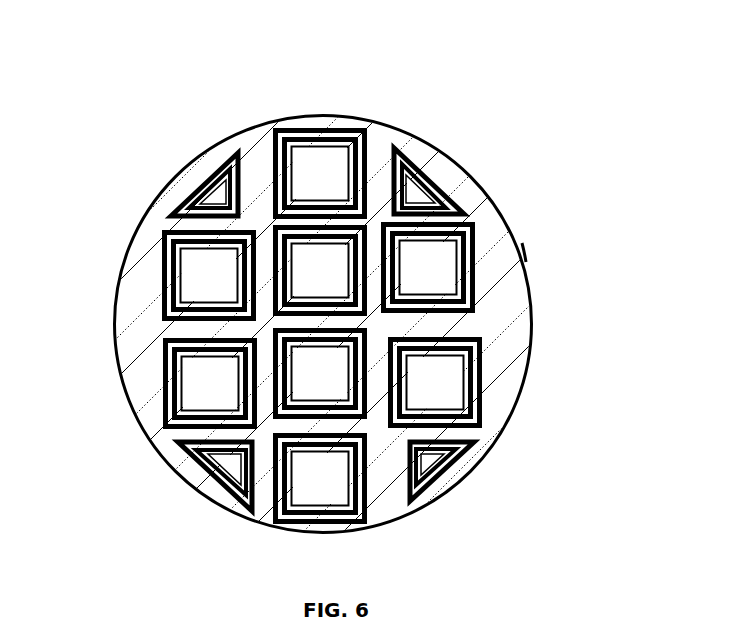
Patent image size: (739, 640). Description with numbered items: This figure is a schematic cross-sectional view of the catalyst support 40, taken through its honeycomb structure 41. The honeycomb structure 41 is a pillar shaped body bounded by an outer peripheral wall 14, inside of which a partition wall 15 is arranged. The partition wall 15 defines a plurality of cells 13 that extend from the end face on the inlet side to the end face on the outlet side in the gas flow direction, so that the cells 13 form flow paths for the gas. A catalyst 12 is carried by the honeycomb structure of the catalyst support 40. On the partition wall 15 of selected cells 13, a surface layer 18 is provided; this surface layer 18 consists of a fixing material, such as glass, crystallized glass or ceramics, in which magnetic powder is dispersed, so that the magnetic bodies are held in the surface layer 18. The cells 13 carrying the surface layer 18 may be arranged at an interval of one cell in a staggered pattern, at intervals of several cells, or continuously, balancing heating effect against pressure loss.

The catalyst support 40 is at (330, 93).
The honeycomb structure 41 is at (524, 243).
The outer peripheral wall 14 is at (413, 143).
The catalyst 12 is at (172, 298).
The cells 13 is at (197, 410).
The partition wall 15 is at (467, 325).
The surface layer 18 is at (158, 244).